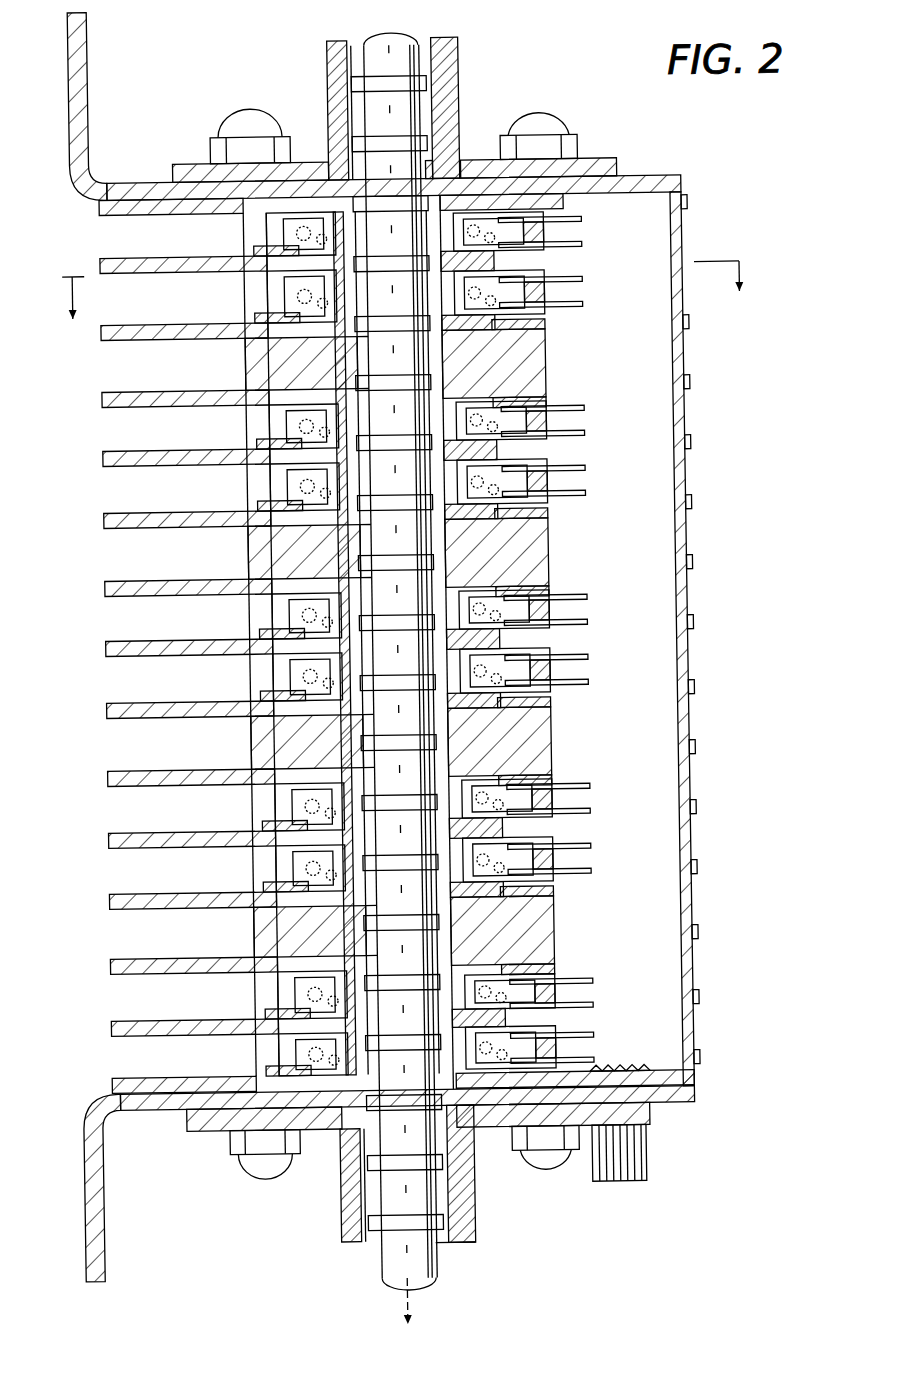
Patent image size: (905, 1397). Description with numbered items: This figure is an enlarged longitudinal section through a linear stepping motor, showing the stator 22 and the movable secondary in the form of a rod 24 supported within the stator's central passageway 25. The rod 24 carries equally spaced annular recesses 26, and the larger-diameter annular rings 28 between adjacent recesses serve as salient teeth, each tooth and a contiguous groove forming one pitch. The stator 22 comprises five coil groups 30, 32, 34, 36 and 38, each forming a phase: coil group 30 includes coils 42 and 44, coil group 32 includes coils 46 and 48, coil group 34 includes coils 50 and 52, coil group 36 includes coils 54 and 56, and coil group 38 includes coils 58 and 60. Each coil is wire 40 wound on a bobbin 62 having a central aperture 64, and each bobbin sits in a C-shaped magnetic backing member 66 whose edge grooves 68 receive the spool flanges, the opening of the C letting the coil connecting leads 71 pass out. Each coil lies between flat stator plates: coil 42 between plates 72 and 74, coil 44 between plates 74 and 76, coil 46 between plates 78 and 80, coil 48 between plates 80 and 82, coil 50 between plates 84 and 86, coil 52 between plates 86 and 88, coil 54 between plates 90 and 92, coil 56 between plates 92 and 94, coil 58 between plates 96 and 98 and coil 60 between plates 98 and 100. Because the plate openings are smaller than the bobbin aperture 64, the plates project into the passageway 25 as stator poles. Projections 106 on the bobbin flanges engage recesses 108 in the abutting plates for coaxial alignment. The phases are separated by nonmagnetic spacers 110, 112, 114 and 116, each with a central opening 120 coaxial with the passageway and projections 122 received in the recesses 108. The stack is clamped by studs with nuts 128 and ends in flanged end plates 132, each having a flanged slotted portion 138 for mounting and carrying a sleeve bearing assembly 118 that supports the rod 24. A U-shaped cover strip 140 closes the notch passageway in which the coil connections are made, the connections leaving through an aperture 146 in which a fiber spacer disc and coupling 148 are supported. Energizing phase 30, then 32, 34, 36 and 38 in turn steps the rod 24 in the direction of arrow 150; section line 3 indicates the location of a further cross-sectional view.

The section line 3- 3 is at (405, 276).
The stator 22 is at (640, 178).
The rod 24 is at (372, 46).
The passageway 25 is at (453, 178).
The annular recesses 26 is at (332, 114).
The annular rings 28 is at (374, 270).
The coil group 30 is at (268, 242).
The coil group 32 is at (265, 414).
The coil group 34 is at (265, 630).
The coil group 36 is at (265, 808).
The coil group 38 is at (265, 992).
The electrically conductive wire 40 is at (540, 224).
The coil 42 is at (268, 234).
The coil 44 is at (265, 302).
The coil 46 is at (278, 432).
The coil 48 is at (278, 492).
The coil 50 is at (278, 612).
The coil 52 is at (278, 670).
The coil 54 is at (278, 812).
The coil 56 is at (278, 862).
The coil 58 is at (278, 1002).
The coil 60 is at (278, 1052).
The bobbin 62 is at (326, 172).
The central aperture 64 is at (332, 262).
The magnetic backing member 66 is at (263, 302).
The edge grooves 68 is at (210, 182).
The coil connecting leads 71 is at (578, 288).
The stator plate 72 is at (96, 209).
The stator plate 74 is at (150, 261).
The stator plate 76 is at (96, 330).
The stator plate 78 is at (96, 396).
The stator plate 80 is at (96, 455).
The stator plate 82 is at (96, 517).
The stator plate 84 is at (96, 585).
The stator plate 86 is at (96, 645).
The stator plate 88 is at (96, 707).
The stator plate 90 is at (96, 775).
The stator plate 92 is at (96, 837).
The stator plate 94 is at (96, 898).
The stator plate 96 is at (96, 963).
The stator plate 98 is at (96, 1025).
The stator plate 100 is at (96, 1082).
The projections 106 is at (560, 250).
The recesses 108 is at (588, 275).
The annular spacer 110 is at (540, 350).
The spacer 112 is at (540, 546).
The spacer 114 is at (540, 736).
The spacer 116 is at (540, 926).
The sleeve bearing assembly 118 is at (450, 66).
The central opening 120 is at (209, 930).
The projections 122 is at (540, 394).
The nuts 128 is at (248, 126).
The end plate 132 is at (152, 184).
The flanged slotted portion 138 is at (86, 52).
The cover strip 140 is at (680, 362).
The aperture 146 is at (606, 1076).
The coupling 148 is at (634, 1132).
The arrow 150 is at (394, 1306).